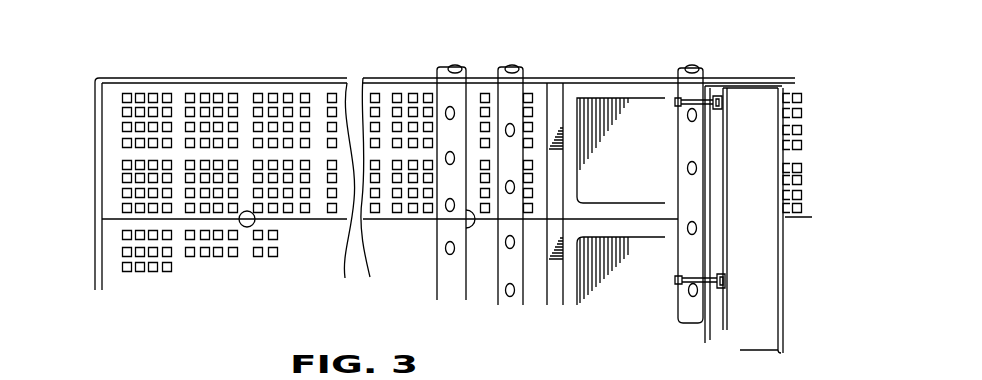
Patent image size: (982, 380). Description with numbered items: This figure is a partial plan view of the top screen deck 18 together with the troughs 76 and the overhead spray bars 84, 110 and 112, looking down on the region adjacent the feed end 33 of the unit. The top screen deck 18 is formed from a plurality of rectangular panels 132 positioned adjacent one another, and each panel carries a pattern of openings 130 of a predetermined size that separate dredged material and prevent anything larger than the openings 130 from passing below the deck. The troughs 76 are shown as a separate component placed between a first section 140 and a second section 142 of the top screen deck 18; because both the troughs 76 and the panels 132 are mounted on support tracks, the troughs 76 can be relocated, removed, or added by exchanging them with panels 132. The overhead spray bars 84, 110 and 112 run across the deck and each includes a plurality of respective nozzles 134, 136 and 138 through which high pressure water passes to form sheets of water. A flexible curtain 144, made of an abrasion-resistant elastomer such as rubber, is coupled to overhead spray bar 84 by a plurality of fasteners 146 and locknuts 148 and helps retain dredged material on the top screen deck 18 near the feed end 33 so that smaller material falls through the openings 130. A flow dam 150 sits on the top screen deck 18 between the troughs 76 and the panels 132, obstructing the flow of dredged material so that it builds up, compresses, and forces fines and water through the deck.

The top screen deck 18 is at (211, 66).
The feed end 33 is at (108, 205).
The troughs 76 is at (640, 117).
The overhead spray bar 84 is at (696, 70).
The overhead spray bar 110 is at (445, 67).
The overhead spray bar 112 is at (508, 67).
The openings 130 is at (140, 96).
The rectangular panels 132 is at (108, 172).
The nozzles 134 is at (678, 101).
The nozzles 136 is at (452, 110).
The nozzles 138 is at (512, 125).
The first section 140 is at (245, 90).
The second section 142 is at (805, 97).
The flexible curtain 144 is at (768, 307).
The fasteners 146 is at (707, 97).
The locknuts 148 is at (753, 88).
The flow dam 150 is at (555, 93).